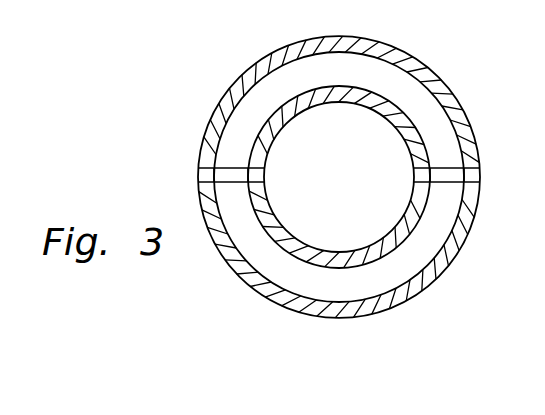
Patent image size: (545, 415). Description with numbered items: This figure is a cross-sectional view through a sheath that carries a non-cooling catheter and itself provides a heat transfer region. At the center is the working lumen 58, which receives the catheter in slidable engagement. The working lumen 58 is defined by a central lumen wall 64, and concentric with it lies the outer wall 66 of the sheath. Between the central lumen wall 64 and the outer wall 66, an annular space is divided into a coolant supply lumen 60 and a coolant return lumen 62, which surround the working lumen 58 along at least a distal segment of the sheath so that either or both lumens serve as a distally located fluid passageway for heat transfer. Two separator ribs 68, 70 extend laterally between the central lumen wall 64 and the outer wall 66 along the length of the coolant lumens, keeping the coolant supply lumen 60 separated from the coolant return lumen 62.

The central working lumen 58 is at (347, 188).
The coolant supply lumen 60 is at (278, 85).
The coolant return lumen 62 is at (398, 268).
The central lumen wall 64 is at (293, 256).
The outer wall 66 is at (432, 72).
The separator rib 68 is at (232, 168).
The separator rib 70 is at (450, 168).